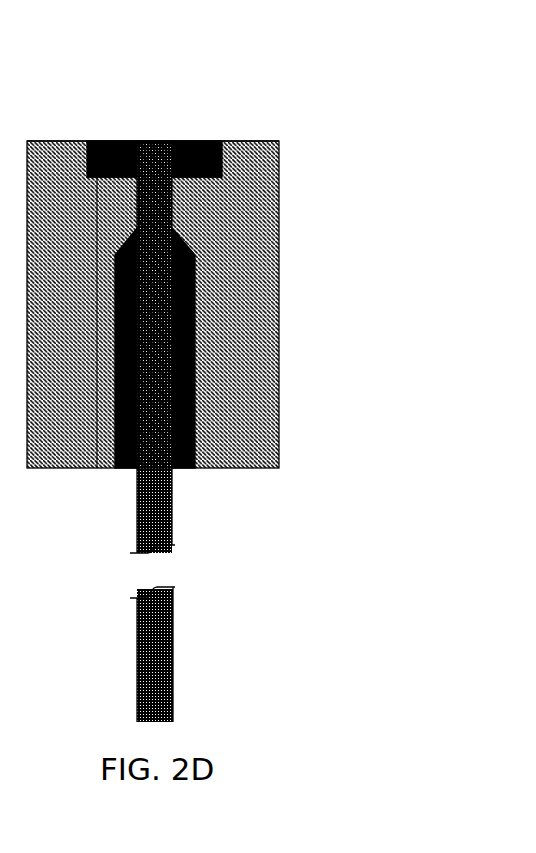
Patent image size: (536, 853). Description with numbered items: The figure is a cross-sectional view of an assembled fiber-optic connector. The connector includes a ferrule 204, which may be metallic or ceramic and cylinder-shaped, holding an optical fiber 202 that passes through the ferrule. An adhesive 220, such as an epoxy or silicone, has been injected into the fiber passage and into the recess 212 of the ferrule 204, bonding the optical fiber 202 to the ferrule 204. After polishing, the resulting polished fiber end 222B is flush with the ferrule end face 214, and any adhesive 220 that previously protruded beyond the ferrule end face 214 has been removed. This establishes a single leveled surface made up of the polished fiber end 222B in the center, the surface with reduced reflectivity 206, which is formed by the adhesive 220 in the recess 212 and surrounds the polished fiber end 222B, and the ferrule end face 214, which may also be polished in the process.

The optical fiber 202 is at (155, 673).
The ferrule 204 is at (263, 270).
The surface with reduced reflectivity 206 is at (120, 143).
The recess 212 is at (105, 140).
The ferrule end face 214 is at (257, 140).
The adhesive 220 is at (192, 147).
The polished fiber end 222B is at (150, 140).